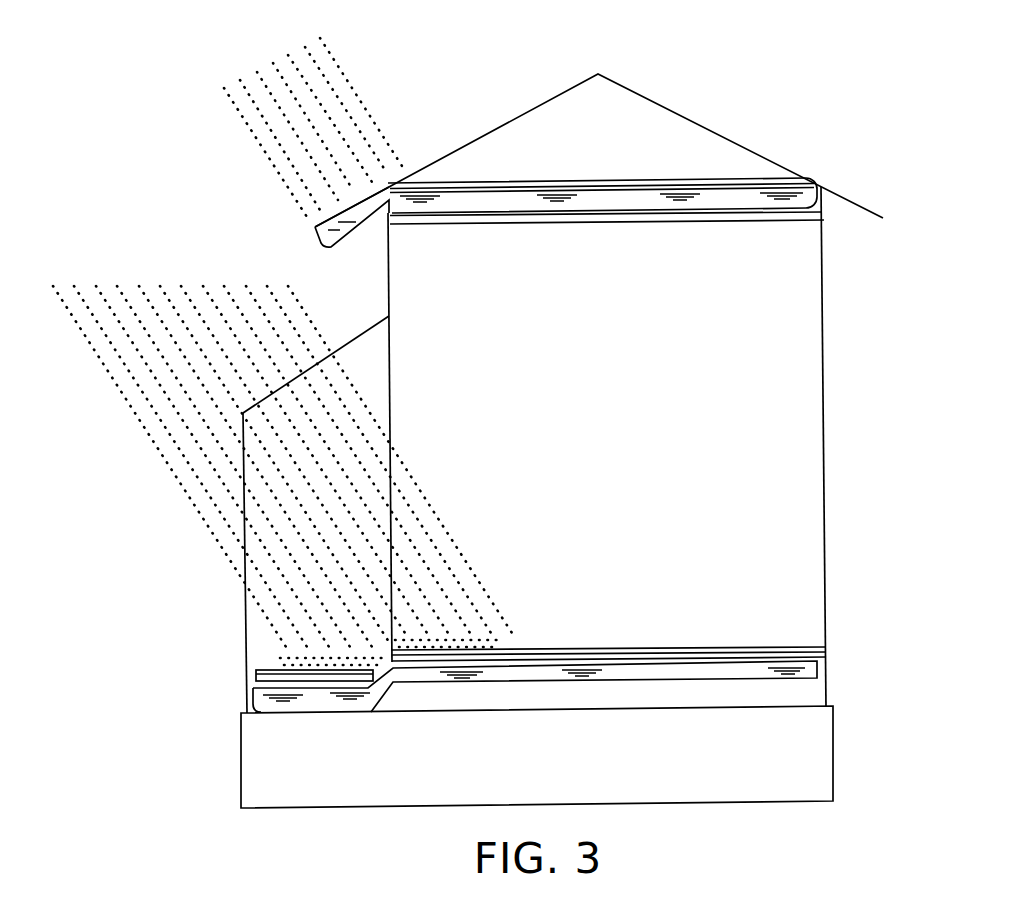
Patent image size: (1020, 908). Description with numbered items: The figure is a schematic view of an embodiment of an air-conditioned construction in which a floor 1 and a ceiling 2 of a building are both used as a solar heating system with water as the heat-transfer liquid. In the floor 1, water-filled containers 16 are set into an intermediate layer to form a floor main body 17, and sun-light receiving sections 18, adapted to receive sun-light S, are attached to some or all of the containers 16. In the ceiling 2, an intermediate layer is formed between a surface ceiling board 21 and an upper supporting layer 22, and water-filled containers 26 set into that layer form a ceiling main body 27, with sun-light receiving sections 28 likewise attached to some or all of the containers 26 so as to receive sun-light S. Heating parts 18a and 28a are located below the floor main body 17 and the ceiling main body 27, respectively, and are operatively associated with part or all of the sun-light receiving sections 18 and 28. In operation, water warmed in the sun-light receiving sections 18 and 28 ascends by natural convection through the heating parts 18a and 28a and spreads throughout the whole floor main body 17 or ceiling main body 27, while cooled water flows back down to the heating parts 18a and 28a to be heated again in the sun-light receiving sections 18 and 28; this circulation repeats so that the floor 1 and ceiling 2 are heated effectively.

The floor 1 is at (841, 663).
The ceiling 2 is at (840, 189).
The containers 16 is at (803, 672).
The floor main body 17 is at (580, 648).
The sun-light receiving sections 18 is at (313, 643).
The heating parts 18a is at (263, 701).
The surface ceiling board 21 is at (806, 216).
The upper supporting layer 22 is at (772, 178).
The containers 26 is at (688, 200).
The ceiling main body 27 is at (662, 224).
The sun-light receiving sections 28 is at (338, 190).
The heating parts 28a is at (315, 228).
The sun-light S is at (282, 349).